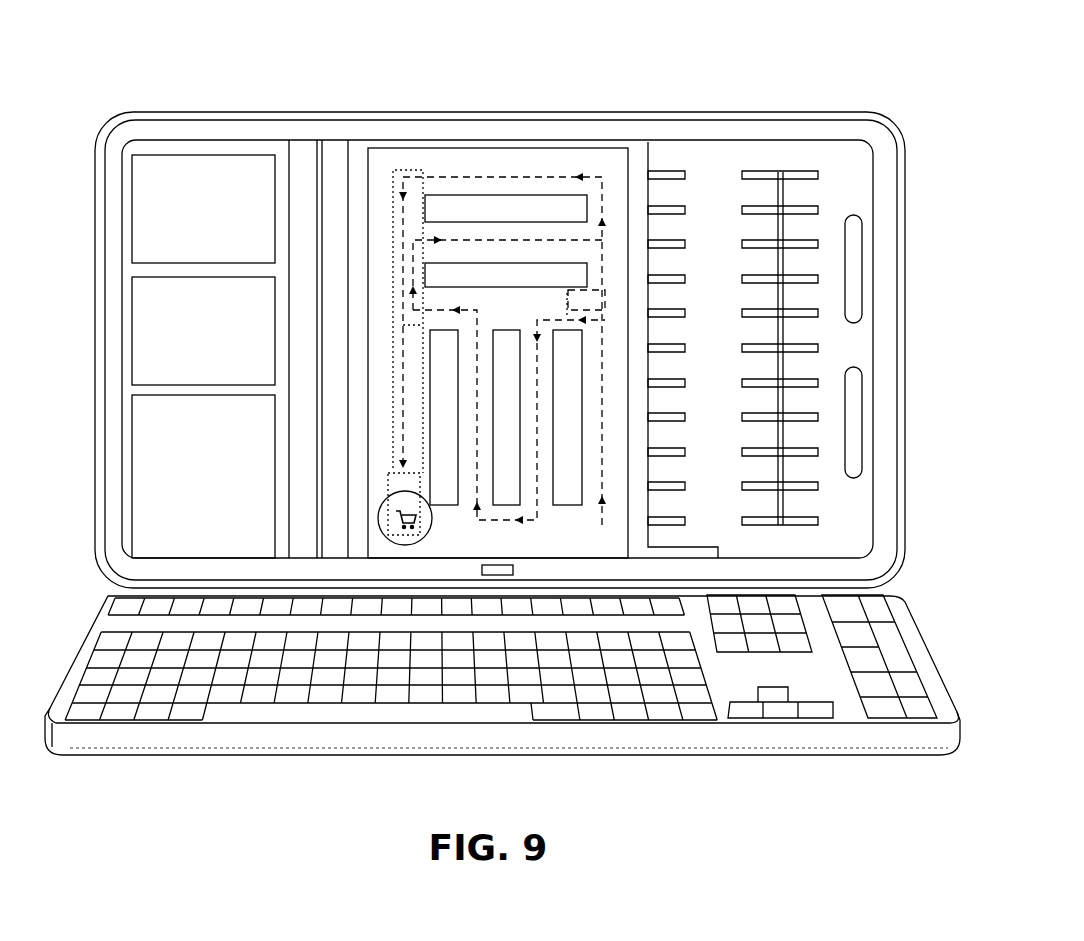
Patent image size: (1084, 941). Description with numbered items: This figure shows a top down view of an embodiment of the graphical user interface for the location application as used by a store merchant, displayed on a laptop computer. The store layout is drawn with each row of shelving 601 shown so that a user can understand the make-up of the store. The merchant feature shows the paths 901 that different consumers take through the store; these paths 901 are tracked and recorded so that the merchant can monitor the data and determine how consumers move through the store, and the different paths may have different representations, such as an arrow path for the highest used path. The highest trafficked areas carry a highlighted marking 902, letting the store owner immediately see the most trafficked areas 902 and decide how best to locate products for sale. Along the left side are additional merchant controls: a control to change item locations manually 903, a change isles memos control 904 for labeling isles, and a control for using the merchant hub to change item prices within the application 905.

The row of shelving 601 is at (442, 507).
The paths 901 is at (500, 175).
The highlighted marking of highest trafficked areas 902 is at (398, 355).
The change item locations control 903 is at (148, 175).
The change isles memos control 904 is at (148, 303).
The change item prices control 905 is at (148, 423).